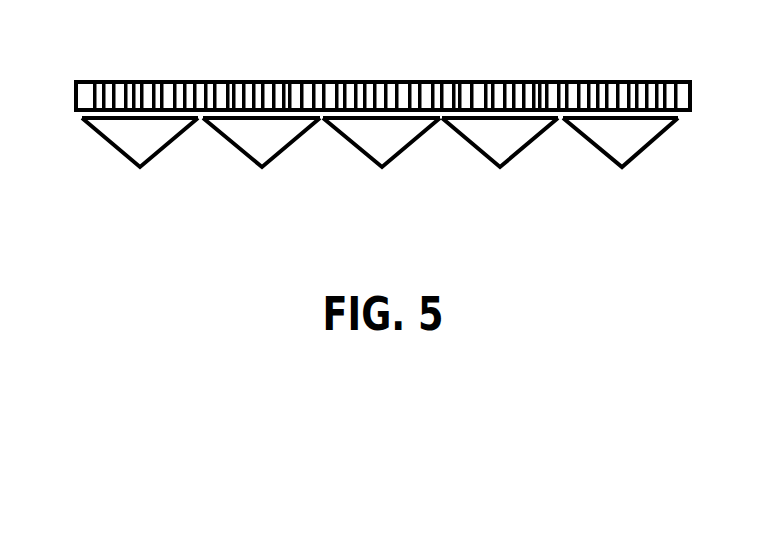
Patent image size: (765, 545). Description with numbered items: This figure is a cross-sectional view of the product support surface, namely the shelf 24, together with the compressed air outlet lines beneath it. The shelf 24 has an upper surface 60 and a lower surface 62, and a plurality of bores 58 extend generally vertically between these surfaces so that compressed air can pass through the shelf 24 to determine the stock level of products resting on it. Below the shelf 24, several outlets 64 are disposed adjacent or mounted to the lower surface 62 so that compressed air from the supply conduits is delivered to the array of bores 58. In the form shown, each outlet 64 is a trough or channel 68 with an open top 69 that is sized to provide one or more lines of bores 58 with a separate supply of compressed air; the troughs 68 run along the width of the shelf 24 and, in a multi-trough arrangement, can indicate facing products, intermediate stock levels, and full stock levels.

The shelf 24 is at (367, 115).
The bores 58 is at (142, 98).
The upper surface 60 is at (217, 82).
The lower surface 62 is at (78, 114).
The outlet 64 is at (380, 164).
The trough 68 is at (163, 148).
The open top 69 is at (125, 118).